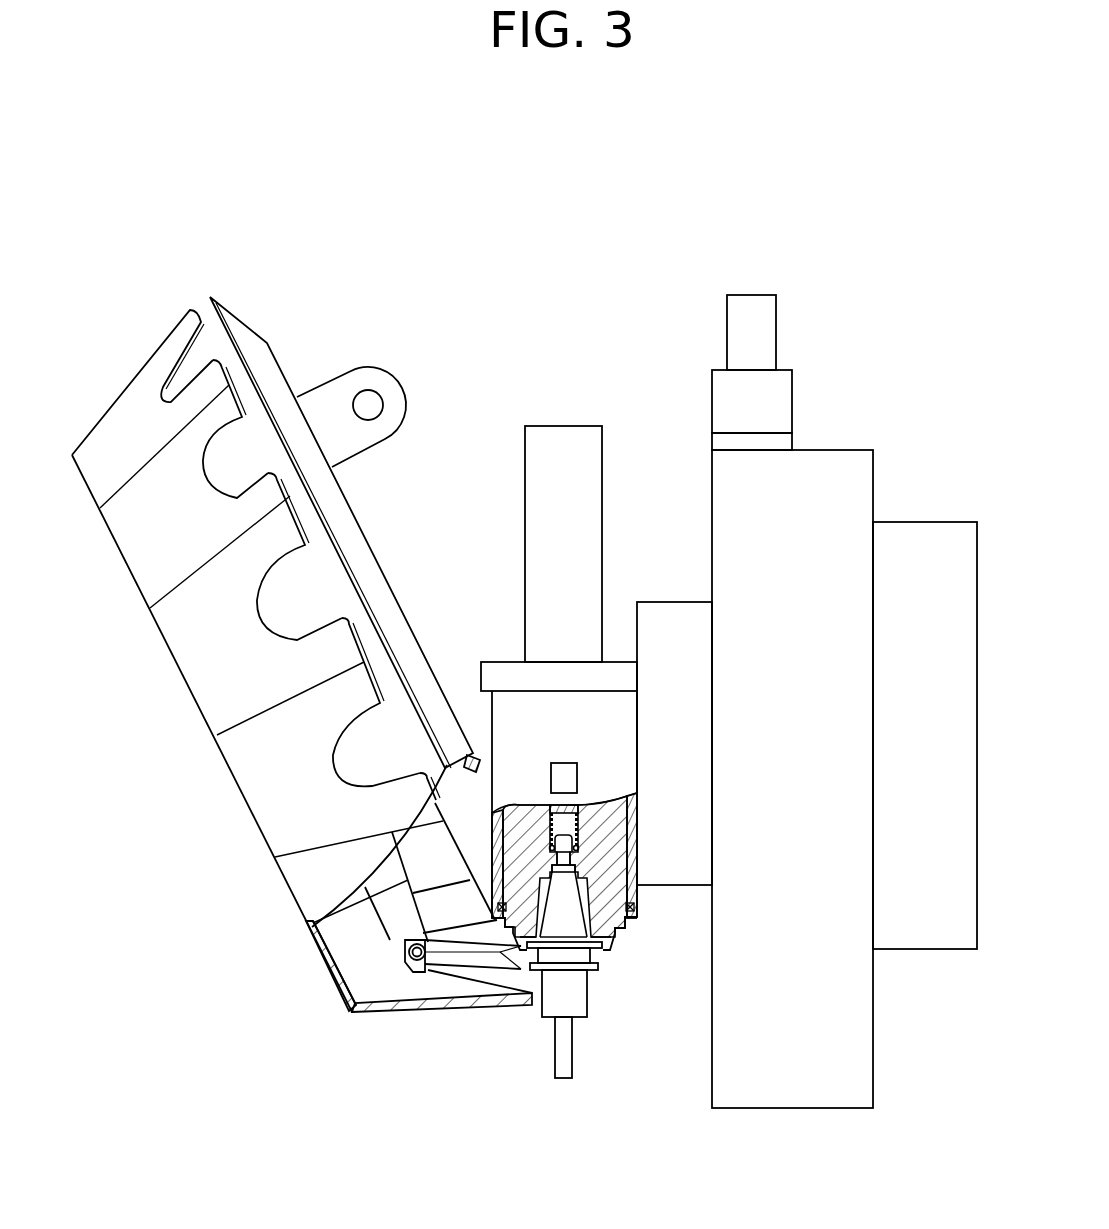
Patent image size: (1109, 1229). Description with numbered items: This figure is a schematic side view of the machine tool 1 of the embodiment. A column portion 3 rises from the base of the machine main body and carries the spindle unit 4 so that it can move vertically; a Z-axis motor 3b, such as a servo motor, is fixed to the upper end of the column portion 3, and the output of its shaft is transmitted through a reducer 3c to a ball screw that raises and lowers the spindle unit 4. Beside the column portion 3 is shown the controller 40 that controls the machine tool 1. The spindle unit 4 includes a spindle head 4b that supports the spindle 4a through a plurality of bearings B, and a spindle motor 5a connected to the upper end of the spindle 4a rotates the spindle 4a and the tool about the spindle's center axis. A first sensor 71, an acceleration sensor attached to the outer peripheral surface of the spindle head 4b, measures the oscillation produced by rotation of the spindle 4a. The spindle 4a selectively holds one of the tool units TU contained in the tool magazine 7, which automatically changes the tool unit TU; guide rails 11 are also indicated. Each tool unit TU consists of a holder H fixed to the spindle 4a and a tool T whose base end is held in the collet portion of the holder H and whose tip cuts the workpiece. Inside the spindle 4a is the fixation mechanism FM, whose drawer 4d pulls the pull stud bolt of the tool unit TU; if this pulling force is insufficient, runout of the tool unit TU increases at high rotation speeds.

The machine tool 1 is at (769, 270).
The column portion 3 is at (875, 1005).
The Z-axis motor 3b is at (777, 318).
The reducer 3c is at (793, 392).
The spindle unit 4 is at (475, 638).
The spindle 4a is at (613, 935).
The spindle head 4b is at (638, 903).
The drawer 4d is at (578, 808).
The spindle motor 5a is at (550, 426).
The tool magazine 7 is at (249, 300).
The guide rails 11 is at (366, 529).
The controller 40 is at (935, 522).
The first sensor 71 is at (563, 763).
The fixation mechanism FM is at (522, 800).
The bearings B is at (638, 892).
The holder H is at (588, 988).
The tool T is at (553, 1053).
The tool unit TU is at (603, 1022).